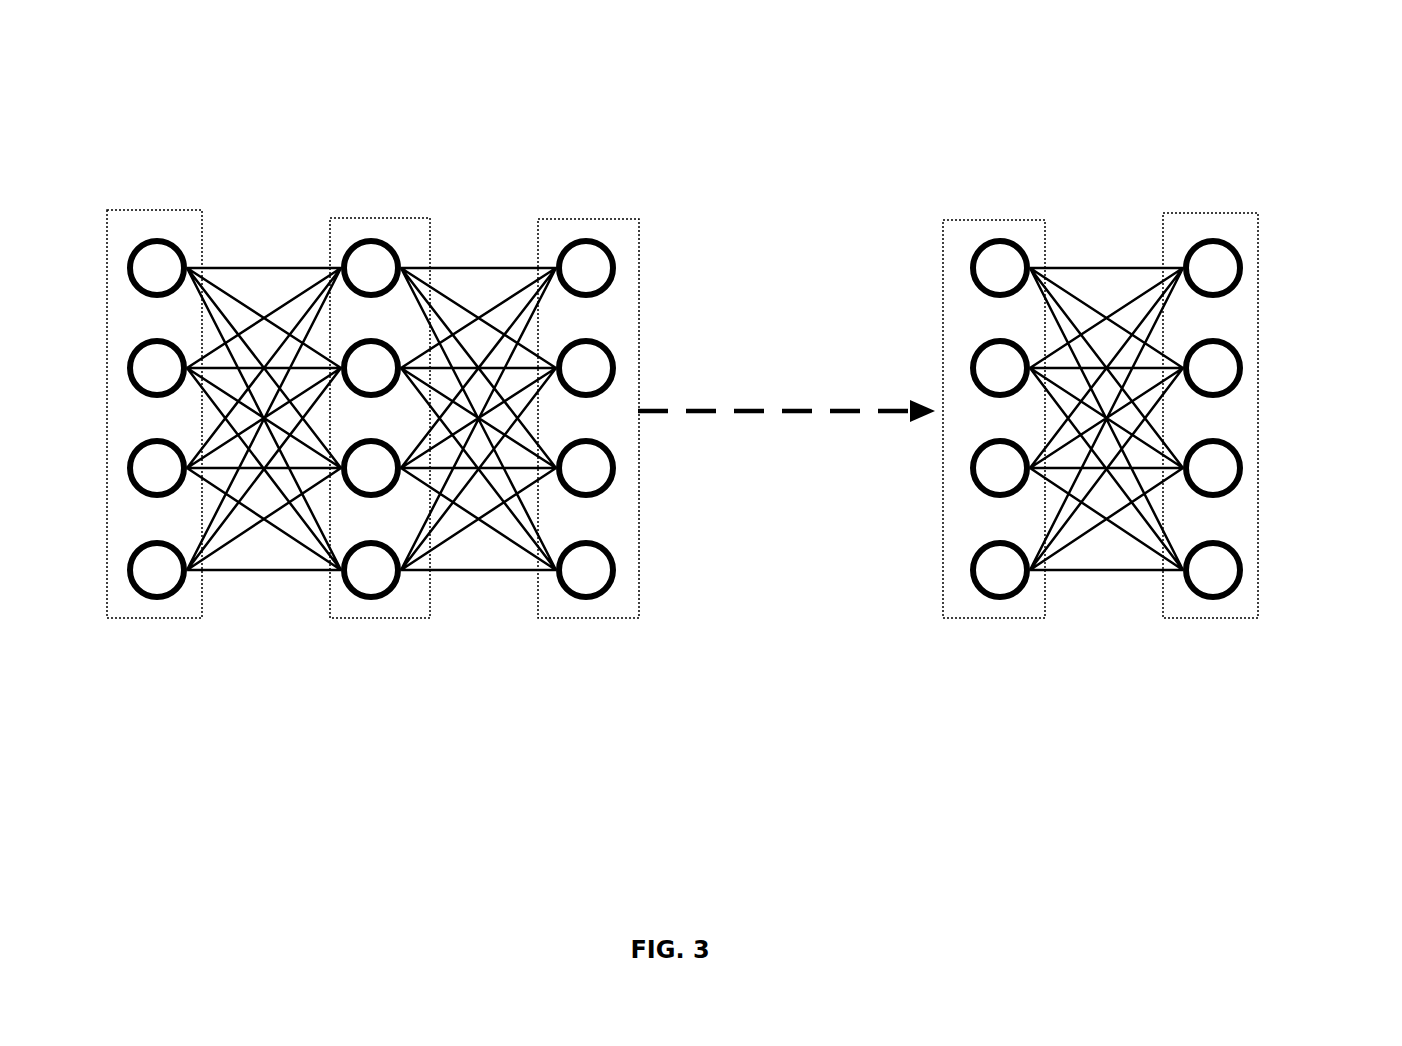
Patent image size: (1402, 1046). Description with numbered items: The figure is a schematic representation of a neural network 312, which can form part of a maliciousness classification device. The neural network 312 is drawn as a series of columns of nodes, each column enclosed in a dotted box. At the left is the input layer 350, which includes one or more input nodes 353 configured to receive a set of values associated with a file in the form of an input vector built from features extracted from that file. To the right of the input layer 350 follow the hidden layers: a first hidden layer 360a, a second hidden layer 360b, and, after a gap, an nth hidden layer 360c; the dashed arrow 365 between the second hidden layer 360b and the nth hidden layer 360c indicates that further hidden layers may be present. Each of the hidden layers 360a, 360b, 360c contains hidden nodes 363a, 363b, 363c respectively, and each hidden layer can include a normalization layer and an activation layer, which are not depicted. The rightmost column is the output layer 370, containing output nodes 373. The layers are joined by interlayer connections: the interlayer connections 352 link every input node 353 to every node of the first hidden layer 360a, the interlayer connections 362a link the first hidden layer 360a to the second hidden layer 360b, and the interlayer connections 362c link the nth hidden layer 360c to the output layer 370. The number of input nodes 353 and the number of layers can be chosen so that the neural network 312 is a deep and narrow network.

The neural network 312 is at (1270, 90).
The input layer 350 is at (139, 349).
The interlayer connections 352 is at (250, 245).
The input node 353 is at (148, 605).
The hidden layer 360a is at (328, 344).
The hidden layer 360b is at (551, 338).
The hidden layer 360c is at (964, 348).
The interlayer connections 362a is at (502, 240).
The interlayer connections 362c is at (1126, 250).
The hidden node 363a is at (340, 591).
The hidden node 363b is at (578, 593).
The hidden node 363c is at (995, 606).
The intermediate hidden layers indicator 365 is at (786, 398).
The output layer 370 is at (1242, 349).
The output node 373 is at (1216, 606).